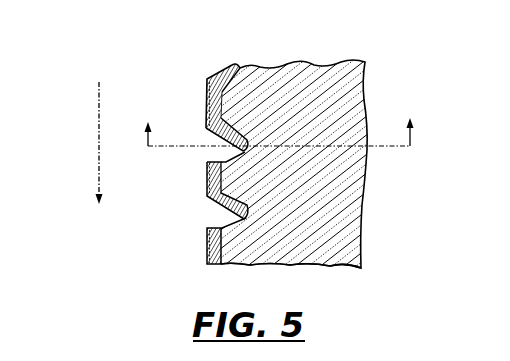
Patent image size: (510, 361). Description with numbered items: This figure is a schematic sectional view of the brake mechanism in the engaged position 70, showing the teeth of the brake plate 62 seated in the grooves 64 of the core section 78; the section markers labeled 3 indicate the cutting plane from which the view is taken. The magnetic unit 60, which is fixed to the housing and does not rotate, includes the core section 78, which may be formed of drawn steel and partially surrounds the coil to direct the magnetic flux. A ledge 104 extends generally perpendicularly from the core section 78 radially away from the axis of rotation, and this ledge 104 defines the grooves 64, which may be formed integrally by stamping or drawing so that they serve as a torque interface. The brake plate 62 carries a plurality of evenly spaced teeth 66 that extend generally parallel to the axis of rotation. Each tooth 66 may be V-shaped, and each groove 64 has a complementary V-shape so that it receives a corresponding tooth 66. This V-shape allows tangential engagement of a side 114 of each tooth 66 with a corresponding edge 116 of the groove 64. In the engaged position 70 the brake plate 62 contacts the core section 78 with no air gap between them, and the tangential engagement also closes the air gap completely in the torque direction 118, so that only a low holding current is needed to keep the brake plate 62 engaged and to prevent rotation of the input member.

The magnetic unit 60 is at (282, 82).
The brake plate 62 is at (206, 95).
The grooves 64 is at (205, 236).
The teeth 66 is at (246, 141).
The engaged position 70 is at (200, 66).
The core section 78 is at (333, 90).
The ledge 104 is at (340, 230).
The side of tooth 114 is at (230, 172).
The edge of groove 116 is at (207, 156).
The torque direction 118 is at (98, 138).
The section line 3- 3 is at (277, 142).